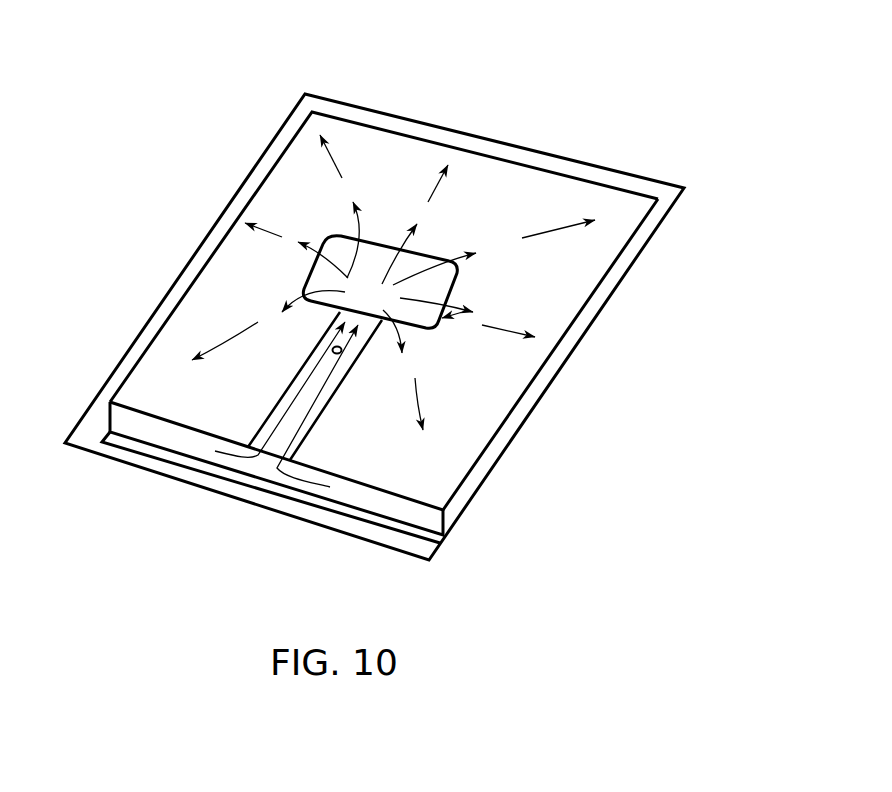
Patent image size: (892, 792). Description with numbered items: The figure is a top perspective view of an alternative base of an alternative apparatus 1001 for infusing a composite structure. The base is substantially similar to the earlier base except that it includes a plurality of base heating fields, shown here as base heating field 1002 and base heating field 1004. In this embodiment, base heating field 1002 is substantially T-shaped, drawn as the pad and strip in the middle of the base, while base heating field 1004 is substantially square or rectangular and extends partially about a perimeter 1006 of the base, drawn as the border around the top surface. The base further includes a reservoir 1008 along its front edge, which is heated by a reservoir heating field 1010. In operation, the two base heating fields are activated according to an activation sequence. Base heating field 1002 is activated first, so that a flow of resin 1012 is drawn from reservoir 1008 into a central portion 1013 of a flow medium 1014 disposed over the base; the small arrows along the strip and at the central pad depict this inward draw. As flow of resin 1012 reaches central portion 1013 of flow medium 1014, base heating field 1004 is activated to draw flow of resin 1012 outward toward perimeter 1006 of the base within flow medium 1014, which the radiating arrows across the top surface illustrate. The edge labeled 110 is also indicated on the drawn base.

The alternative apparatus 1001 is at (593, 65).
The base heating field 1002 is at (462, 288).
The base heating field 1004 is at (355, 103).
The perimeter 1006 is at (592, 323).
The reservoir 1008 is at (387, 512).
The reservoir heating field 1010 is at (123, 465).
The flow of resin 1012 is at (487, 277).
The central portion 1013 is at (460, 322).
The flow medium 1014 is at (485, 185).
The plate edge 110 is at (472, 473).